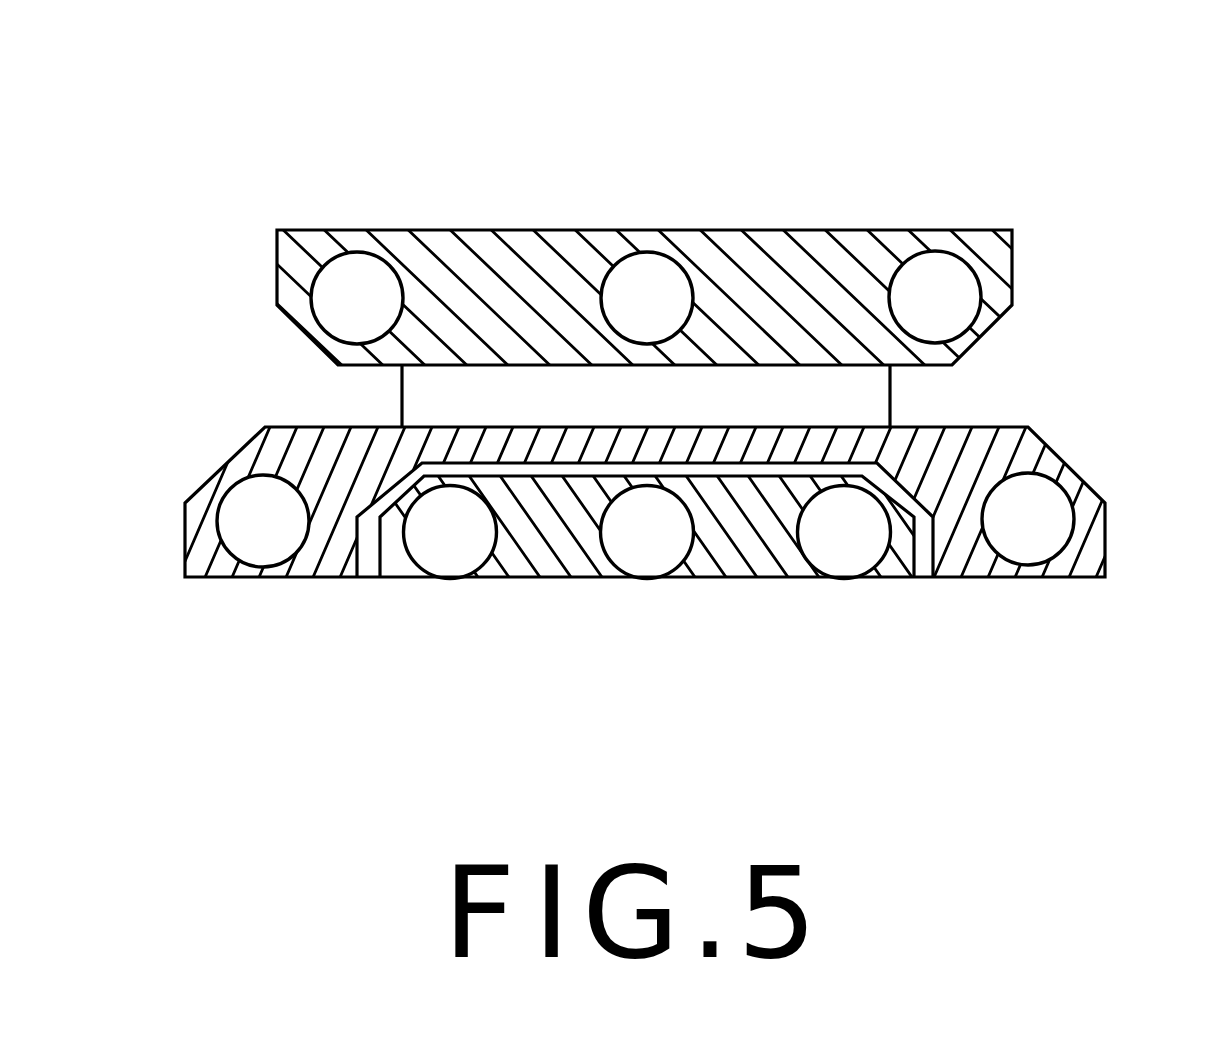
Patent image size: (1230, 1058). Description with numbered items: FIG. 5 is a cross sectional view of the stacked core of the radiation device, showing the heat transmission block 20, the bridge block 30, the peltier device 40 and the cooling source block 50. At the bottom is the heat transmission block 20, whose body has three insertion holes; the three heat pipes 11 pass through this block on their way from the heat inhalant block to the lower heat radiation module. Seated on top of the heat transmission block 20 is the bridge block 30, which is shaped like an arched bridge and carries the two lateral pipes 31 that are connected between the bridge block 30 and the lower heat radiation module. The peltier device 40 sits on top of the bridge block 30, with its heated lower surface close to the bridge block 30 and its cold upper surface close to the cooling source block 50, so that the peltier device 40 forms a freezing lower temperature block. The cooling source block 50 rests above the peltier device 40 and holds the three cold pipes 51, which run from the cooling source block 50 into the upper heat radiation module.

The heat pipes 11 is at (670, 528).
The heat transmission block 20 is at (550, 532).
The bridge block 30 is at (950, 508).
The lateral pipes 31 is at (1050, 507).
The peltier device 40 is at (860, 394).
The cooling source block 50 is at (508, 283).
The cold pipes 51 is at (649, 285).